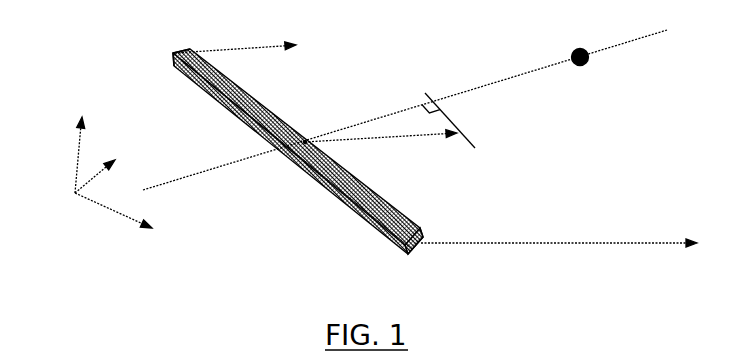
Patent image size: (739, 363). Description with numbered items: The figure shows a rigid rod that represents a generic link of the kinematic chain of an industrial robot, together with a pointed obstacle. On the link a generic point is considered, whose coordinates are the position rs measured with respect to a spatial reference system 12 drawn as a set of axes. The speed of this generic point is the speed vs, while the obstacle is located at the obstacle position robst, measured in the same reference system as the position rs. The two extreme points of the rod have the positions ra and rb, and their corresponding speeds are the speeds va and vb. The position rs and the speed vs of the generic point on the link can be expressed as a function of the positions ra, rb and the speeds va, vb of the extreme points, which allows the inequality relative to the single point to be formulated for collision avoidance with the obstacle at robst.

The spatial reference system 12 is at (75, 193).
The position of extreme point b rb is at (166, 80).
The position of extreme point a ra is at (429, 260).
The position of generic point rs is at (405, 112).
The speed of generic point vs is at (387, 158).
The speed of extreme point b vb is at (243, 67).
The speed of extreme point a va is at (559, 266).
The position of obstacle robst is at (626, 73).